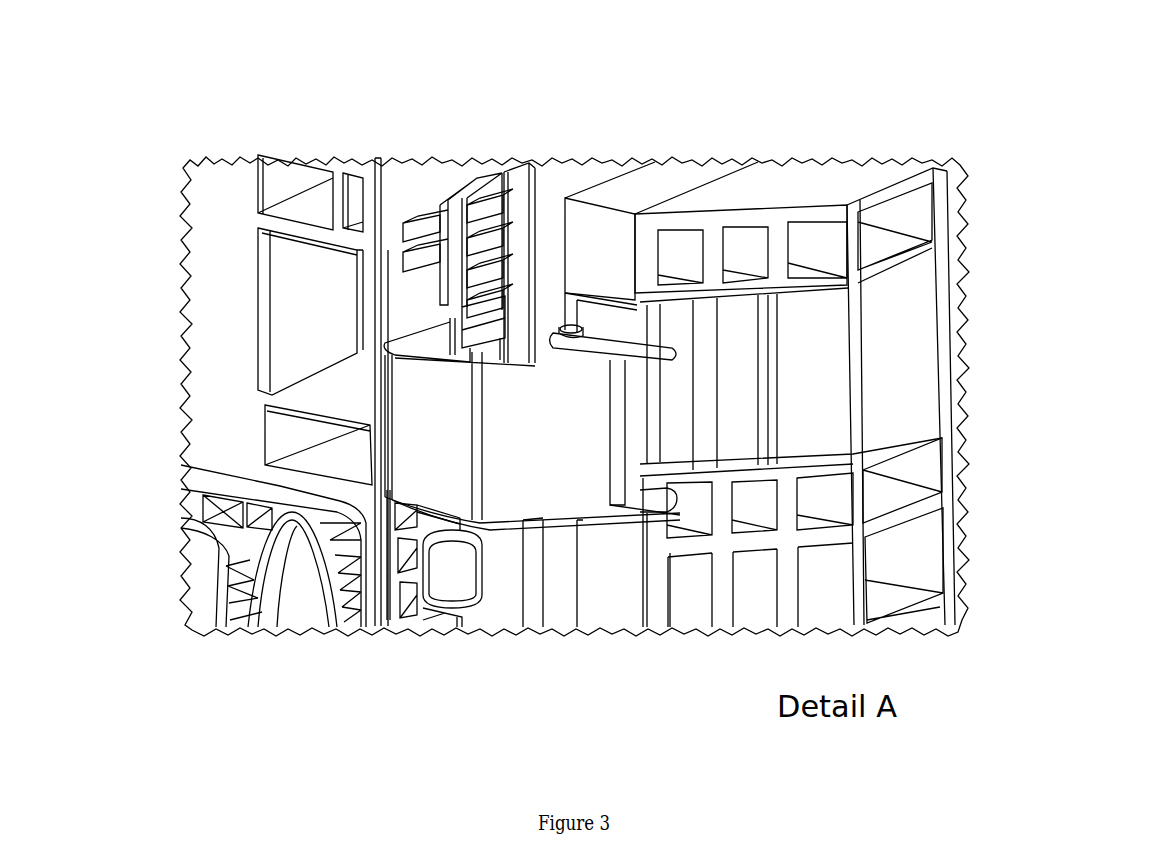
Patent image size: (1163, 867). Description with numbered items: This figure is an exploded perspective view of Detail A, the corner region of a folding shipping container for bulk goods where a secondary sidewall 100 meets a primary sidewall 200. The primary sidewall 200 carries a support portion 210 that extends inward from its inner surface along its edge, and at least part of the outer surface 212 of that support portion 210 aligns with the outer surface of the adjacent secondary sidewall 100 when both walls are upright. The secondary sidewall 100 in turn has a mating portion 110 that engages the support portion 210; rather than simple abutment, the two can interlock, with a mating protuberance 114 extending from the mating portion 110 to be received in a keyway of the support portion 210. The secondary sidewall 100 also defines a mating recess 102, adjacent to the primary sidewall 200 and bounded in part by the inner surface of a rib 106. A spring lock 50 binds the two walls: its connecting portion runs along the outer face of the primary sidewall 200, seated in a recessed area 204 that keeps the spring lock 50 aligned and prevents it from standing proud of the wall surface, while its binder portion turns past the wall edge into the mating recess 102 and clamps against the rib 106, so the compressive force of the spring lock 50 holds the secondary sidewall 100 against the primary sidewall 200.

The spring lock 50 is at (560, 523).
The secondary sidewall 100 is at (165, 435).
The mating recess 102 is at (297, 336).
The rib 106 is at (380, 285).
The mating portion 110 is at (518, 183).
The mating protuberance 114 is at (415, 225).
The primary sidewall 200 is at (975, 370).
The recessed area 204 is at (607, 318).
The support portion 210 is at (680, 180).
The outer surface of support portion 212 is at (613, 222).